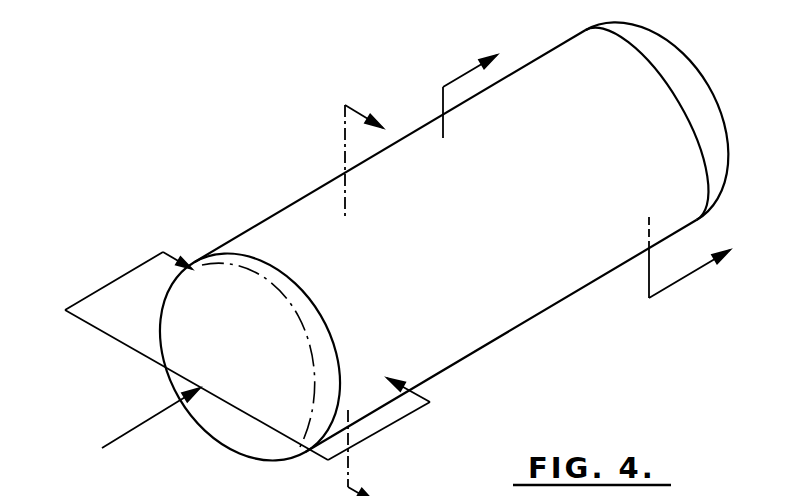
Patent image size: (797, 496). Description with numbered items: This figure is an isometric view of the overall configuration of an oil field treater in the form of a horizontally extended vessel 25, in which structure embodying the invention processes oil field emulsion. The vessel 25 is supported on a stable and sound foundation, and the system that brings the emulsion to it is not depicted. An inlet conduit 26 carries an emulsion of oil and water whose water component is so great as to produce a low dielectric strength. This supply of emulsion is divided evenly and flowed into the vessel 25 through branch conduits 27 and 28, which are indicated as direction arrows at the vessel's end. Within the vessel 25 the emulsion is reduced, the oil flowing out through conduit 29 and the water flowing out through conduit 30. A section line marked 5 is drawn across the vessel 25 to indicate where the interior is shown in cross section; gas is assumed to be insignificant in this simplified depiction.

The vessel 25 is at (518, 326).
The inlet conduit 26 is at (163, 412).
The branch conduit 27 is at (128, 272).
The branch conduit 28 is at (413, 411).
The conduit 29 is at (462, 76).
The conduit 30 is at (677, 282).
The section line 5- 5 is at (371, 295).